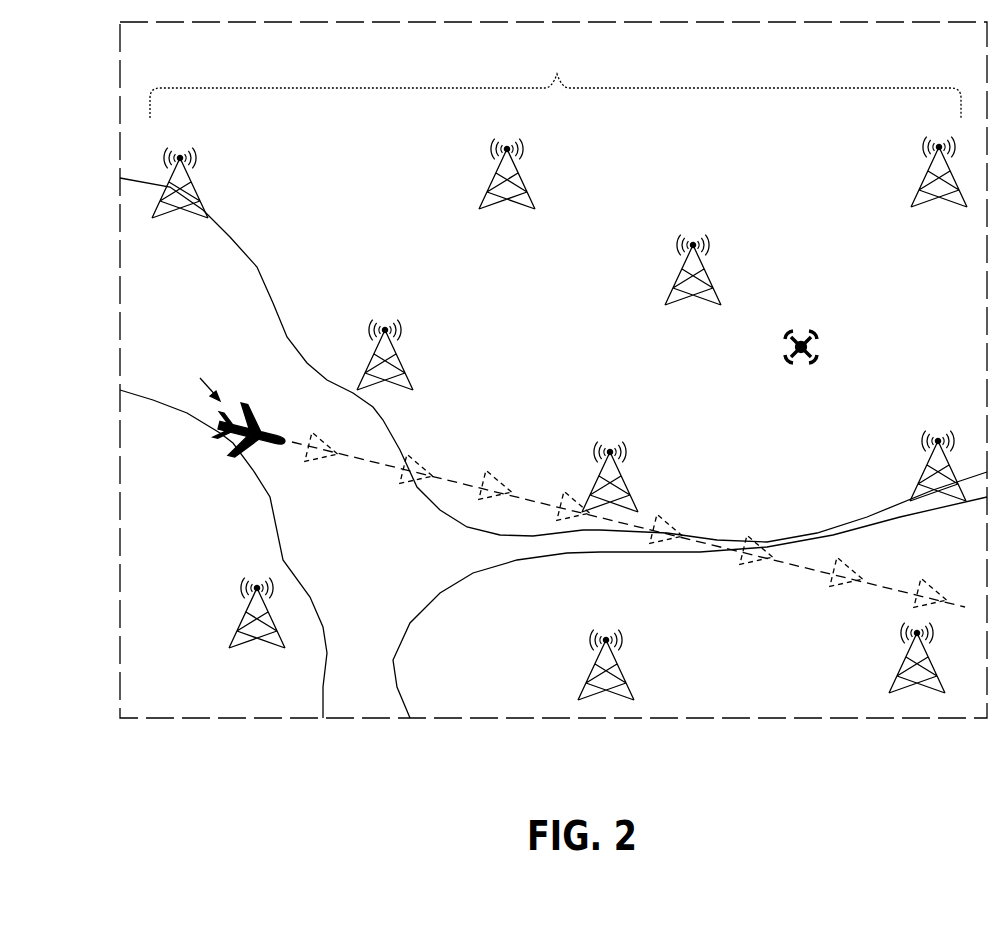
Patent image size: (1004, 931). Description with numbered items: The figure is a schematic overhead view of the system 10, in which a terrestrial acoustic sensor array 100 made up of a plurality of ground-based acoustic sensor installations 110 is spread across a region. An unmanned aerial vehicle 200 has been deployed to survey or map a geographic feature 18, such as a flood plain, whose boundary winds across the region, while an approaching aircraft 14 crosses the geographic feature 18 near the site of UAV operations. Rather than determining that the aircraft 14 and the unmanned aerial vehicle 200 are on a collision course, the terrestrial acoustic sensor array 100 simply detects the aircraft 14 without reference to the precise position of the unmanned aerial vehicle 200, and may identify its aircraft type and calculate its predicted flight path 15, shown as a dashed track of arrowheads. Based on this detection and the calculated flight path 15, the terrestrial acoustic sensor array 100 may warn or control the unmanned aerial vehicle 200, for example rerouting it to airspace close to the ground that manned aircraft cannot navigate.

The system 10 is at (176, 57).
The terrestrial acoustic sensor array 100 is at (555, 81).
The ground-based acoustic sensor installation 110 is at (517, 182).
The aircraft 14 is at (257, 417).
The flight path 15 is at (373, 468).
The geographic feature 18 is at (470, 570).
The unmanned aerial vehicle 200 is at (798, 326).